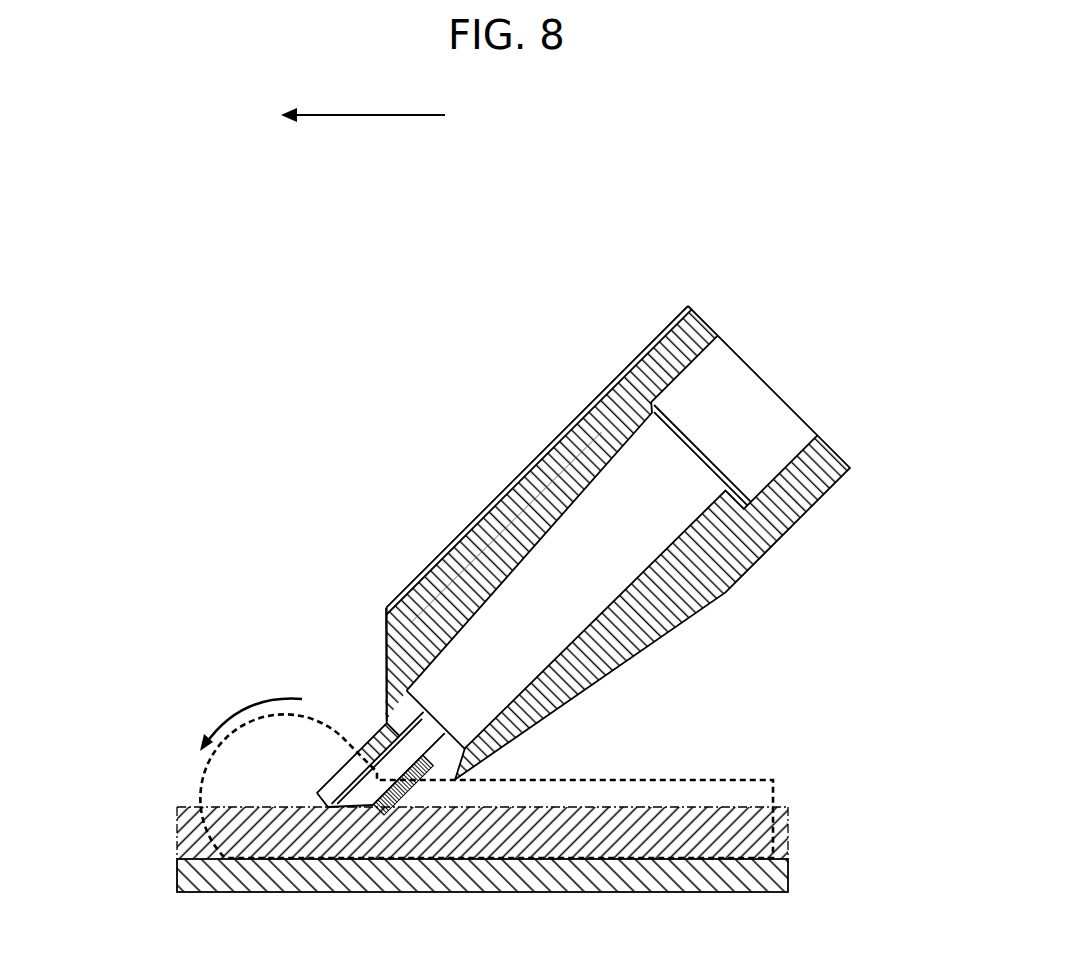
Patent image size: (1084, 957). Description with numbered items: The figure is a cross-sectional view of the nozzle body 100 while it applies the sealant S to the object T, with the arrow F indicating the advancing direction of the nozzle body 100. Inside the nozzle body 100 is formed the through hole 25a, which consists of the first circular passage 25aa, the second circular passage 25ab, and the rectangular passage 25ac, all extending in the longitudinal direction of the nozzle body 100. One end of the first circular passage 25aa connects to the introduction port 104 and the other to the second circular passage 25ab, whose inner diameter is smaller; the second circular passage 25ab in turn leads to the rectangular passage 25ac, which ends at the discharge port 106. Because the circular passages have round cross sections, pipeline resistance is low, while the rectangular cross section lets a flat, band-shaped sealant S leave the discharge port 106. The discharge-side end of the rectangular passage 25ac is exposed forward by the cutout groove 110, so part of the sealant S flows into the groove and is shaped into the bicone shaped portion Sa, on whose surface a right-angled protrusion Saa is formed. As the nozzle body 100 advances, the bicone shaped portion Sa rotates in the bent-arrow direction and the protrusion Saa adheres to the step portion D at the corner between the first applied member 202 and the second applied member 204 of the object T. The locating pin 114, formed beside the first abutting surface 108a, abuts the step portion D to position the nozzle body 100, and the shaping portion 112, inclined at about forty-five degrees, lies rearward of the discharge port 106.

The nozzle body 100 is at (386, 250).
The introduction port 104 is at (767, 382).
The through hole 25a is at (617, 512).
The first circular passage 25aa is at (730, 415).
The second circular passage 25ab is at (537, 600).
The rectangular passage 25ac is at (386, 721).
The discharge port 106 is at (350, 813).
The first abutting surface 108a is at (440, 814).
The cutout groove 110 is at (360, 750).
The shaping portion 112 is at (460, 791).
The locating pin 114 is at (385, 810).
The first applied member 202 is at (790, 873).
The second applied member 204 is at (793, 827).
The sealant S is at (753, 793).
The bicone shaped portion Sa is at (243, 797).
The protrusion Saa is at (205, 782).
The step portion D is at (183, 828).
The object T is at (937, 780).
The advancing direction F is at (363, 103).